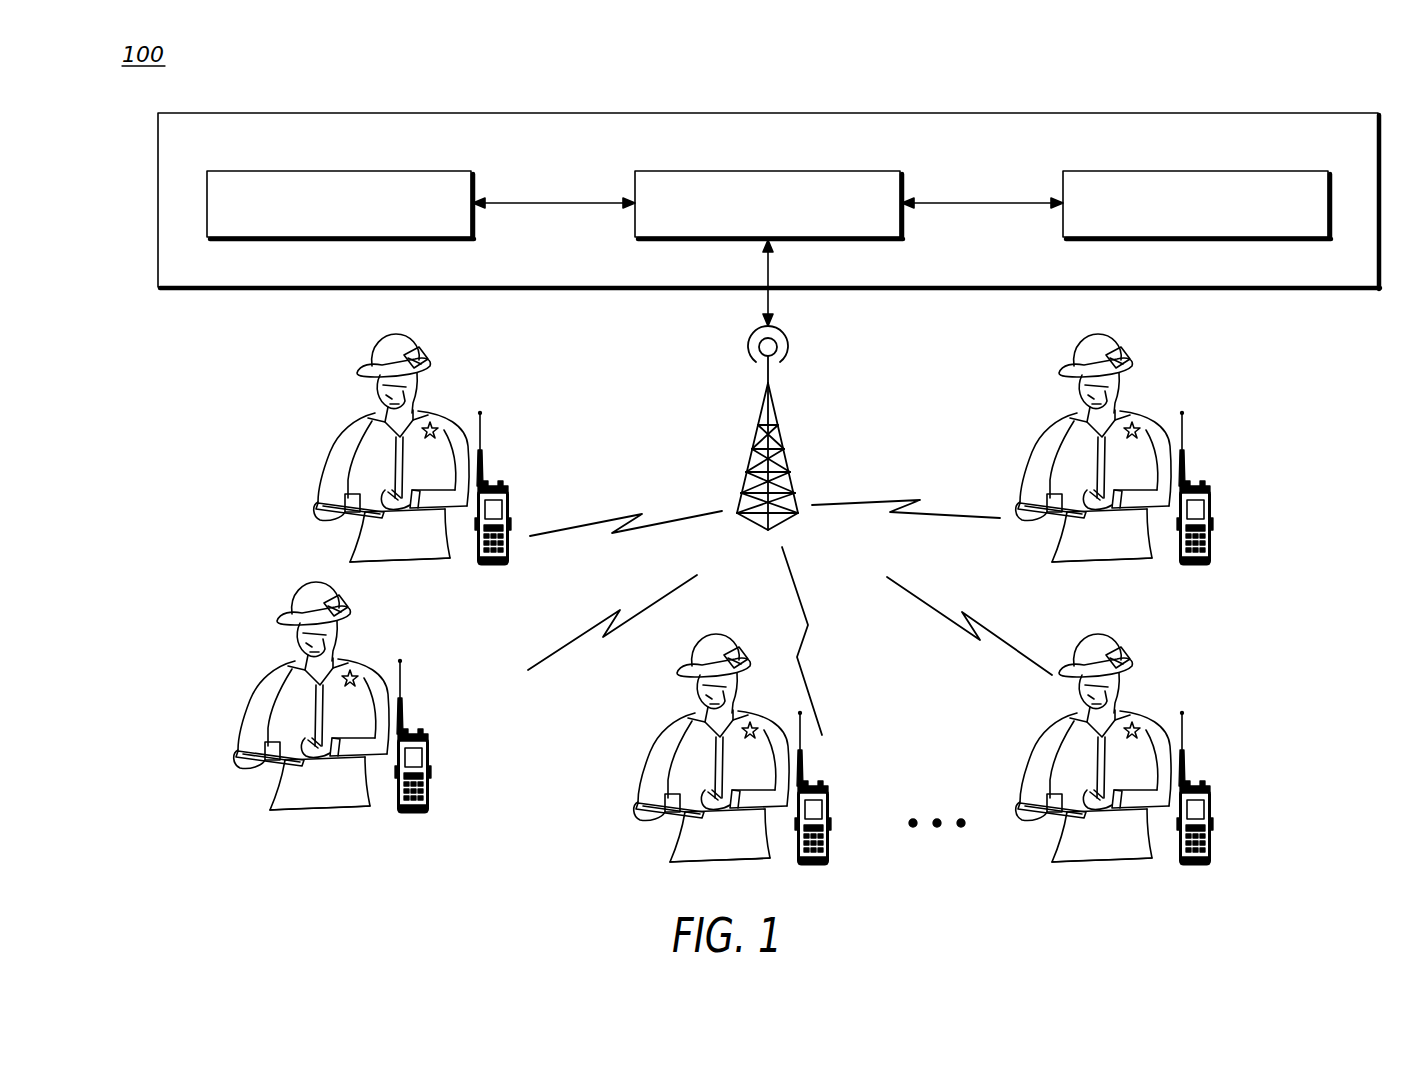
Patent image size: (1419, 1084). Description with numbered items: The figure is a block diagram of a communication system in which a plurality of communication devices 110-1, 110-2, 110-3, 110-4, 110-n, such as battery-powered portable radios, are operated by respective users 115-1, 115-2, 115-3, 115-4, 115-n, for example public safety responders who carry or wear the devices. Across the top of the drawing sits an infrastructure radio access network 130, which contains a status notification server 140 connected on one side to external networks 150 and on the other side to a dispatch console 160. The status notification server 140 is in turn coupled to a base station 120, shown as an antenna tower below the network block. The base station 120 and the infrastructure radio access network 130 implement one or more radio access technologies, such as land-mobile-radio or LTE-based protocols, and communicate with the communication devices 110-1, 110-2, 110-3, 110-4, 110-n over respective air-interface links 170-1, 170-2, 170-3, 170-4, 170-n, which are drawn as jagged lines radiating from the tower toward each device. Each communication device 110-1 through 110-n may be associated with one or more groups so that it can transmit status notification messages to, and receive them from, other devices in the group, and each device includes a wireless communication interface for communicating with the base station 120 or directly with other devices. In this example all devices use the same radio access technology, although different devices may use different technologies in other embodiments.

The infrastructure radio access network 130 is at (765, 113).
The status notification server 140 is at (835, 171).
The external networks 150 is at (405, 171).
The dispatch console 160 is at (1260, 171).
The base station 120 is at (784, 440).
The air-interface link 170-1 is at (628, 515).
The air-interface link 170-2 is at (605, 618).
The air-interface link 170-3 is at (878, 497).
The air-interface link 170-4 is at (815, 675).
The air-interface link 170-n is at (985, 628).
The user 115-1 is at (432, 410).
The user 115-2 is at (353, 658).
The user 115-3 is at (1135, 410).
The user 115-4 is at (682, 718).
The user 115-n is at (1140, 714).
The communication device 110-1 is at (507, 487).
The communication device 110-2 is at (427, 735).
The communication device 110-3 is at (1210, 487).
The communication device 110-4 is at (827, 787).
The communication device 110-n is at (1212, 790).